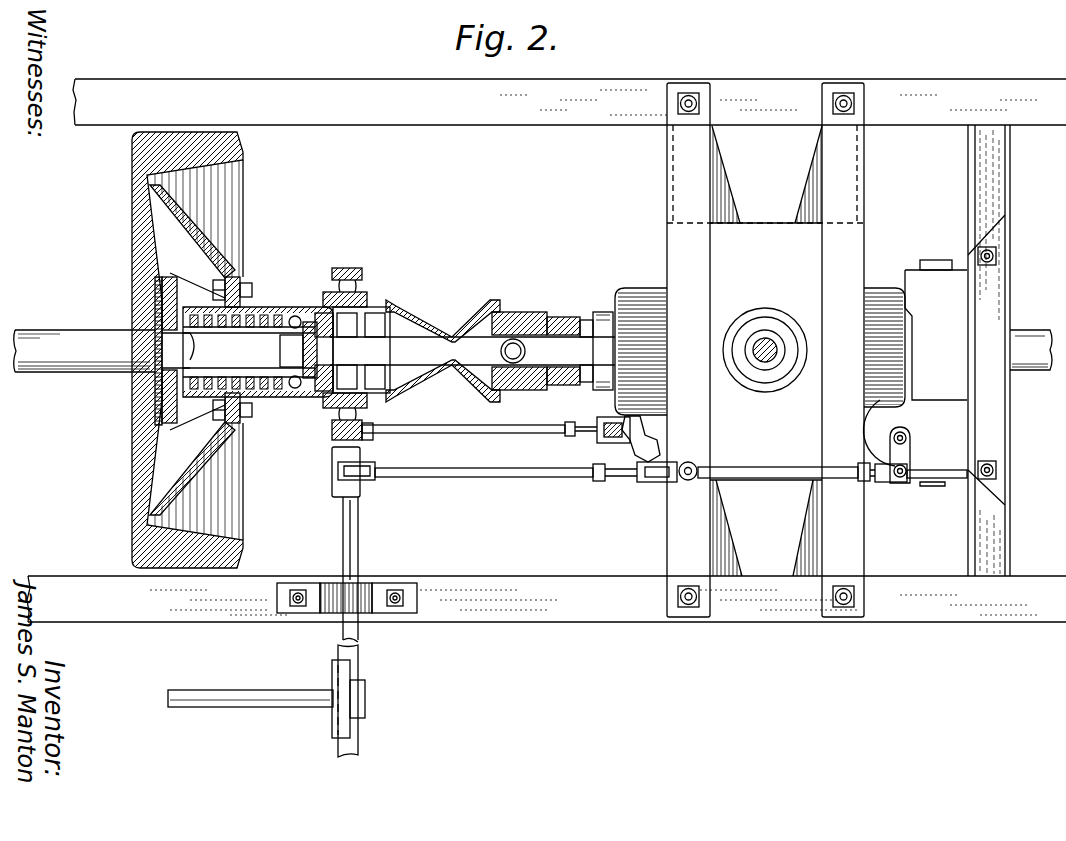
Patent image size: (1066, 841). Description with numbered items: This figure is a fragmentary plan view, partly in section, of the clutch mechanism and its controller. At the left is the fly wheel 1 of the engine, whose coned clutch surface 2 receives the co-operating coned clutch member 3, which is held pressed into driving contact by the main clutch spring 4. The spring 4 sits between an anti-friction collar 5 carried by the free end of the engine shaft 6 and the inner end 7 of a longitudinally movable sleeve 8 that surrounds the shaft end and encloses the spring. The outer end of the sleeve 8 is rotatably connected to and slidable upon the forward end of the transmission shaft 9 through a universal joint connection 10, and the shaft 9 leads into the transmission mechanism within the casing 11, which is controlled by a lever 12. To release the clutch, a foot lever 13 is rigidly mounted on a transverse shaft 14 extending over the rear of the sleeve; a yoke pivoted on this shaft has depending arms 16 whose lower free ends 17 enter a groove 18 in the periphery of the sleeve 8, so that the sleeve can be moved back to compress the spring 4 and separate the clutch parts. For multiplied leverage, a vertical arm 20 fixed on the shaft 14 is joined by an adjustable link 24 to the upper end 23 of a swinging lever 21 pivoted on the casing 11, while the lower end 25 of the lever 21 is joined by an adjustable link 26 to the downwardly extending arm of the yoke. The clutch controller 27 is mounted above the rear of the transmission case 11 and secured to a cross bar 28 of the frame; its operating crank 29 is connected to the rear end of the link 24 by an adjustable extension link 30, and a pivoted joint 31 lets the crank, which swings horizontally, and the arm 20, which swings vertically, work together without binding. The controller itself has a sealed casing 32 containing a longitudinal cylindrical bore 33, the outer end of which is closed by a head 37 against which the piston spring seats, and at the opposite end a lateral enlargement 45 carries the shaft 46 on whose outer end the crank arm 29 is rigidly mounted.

The fly wheel 1 is at (140, 151).
The coned clutch surface 2 is at (244, 158).
The co-operating coned clutch member 3 is at (205, 172).
The main clutch spring 4 is at (263, 317).
The anti-friction collar 5 is at (310, 333).
The engine shaft 6 is at (96, 330).
The inner end of sleeve 7 is at (163, 380).
The longitudinally movable sleeve 8 is at (281, 398).
The transmission shaft 9 is at (562, 332).
The universal joint connection 10 is at (426, 350).
The casing 11 is at (680, 270).
The lever 12 is at (765, 345).
The foot lever 13 is at (275, 690).
The transverse shaft 14 is at (356, 556).
The depending arms 16 is at (360, 262).
The lower free ends 17 is at (340, 421).
The groove 18 is at (370, 410).
The vertical arm 20 is at (333, 467).
The swinging lever 21 is at (630, 446).
The upper end of lever 23 is at (656, 482).
The adjustable link 24 is at (566, 478).
The lower end of lever 25 is at (612, 428).
The adjustable link 26 is at (526, 430).
The automobile clutch controller 27 is at (945, 388).
The cross bar 28 is at (988, 558).
The operating crank 29 is at (895, 483).
The adjustable extension link 30 is at (775, 467).
The pivoted joint 31 is at (687, 463).
The casing 32 is at (910, 462).
The longitudinal cylindrical bore 33 is at (910, 470).
The head 37 is at (931, 262).
The lateral enlargement 45 is at (880, 406).
The shaft 46 is at (902, 436).